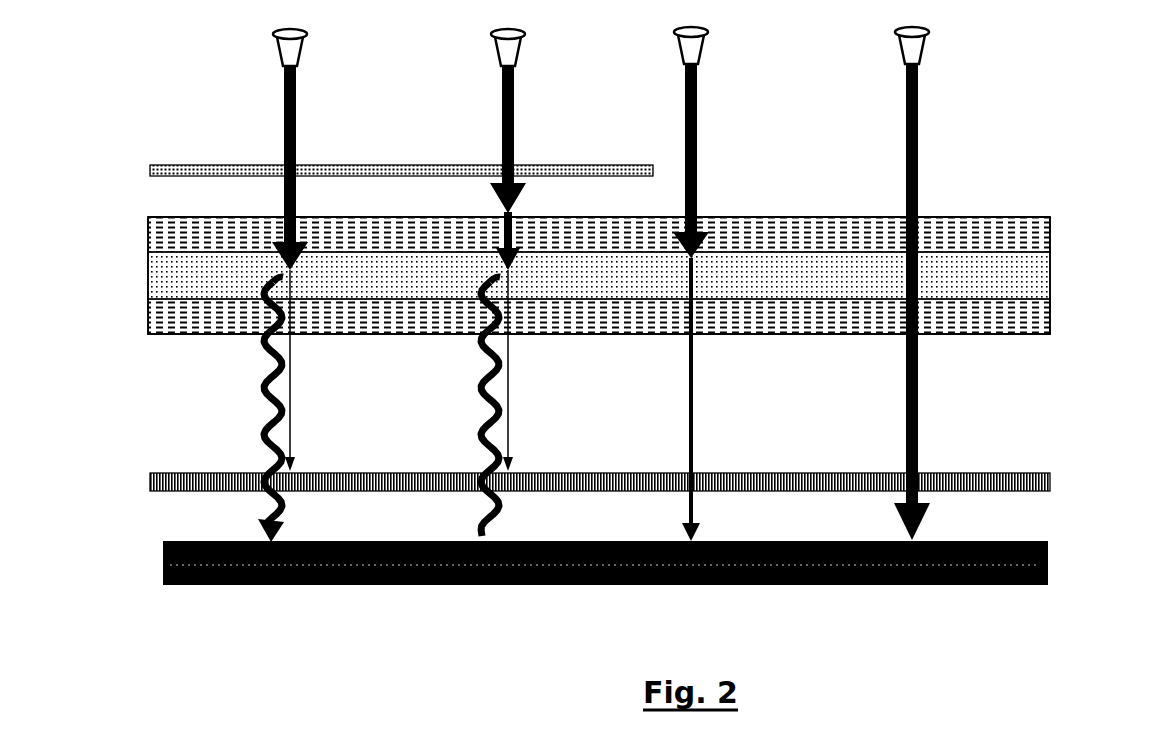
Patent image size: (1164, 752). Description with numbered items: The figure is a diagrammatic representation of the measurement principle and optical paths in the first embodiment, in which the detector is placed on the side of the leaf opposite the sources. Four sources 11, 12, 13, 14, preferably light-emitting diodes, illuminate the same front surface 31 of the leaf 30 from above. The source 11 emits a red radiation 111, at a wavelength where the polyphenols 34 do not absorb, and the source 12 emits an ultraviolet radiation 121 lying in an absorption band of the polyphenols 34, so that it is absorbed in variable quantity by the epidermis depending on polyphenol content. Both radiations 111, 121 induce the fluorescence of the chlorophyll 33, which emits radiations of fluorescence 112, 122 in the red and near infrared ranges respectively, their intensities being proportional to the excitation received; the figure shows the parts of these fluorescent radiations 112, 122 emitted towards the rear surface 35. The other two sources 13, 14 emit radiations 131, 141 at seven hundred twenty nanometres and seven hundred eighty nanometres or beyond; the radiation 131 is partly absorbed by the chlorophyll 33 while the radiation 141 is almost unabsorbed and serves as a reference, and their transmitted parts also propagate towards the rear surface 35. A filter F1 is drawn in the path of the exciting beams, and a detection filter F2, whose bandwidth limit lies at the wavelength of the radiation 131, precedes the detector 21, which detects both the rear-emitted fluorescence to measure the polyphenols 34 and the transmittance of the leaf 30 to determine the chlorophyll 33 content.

The source 11 is at (277, 44).
The source 12 is at (495, 44).
The source 13 is at (679, 42).
The source 14 is at (899, 44).
The radiation 111 is at (284, 119).
The radiation 121 is at (502, 109).
The radiation 131 is at (685, 117).
The radiation 141 is at (906, 110).
The radiation of fluorescence 112 is at (264, 368).
The radiation of fluorescence 122 is at (482, 350).
The leaf 30 is at (592, 268).
The front surface 31 is at (1000, 215).
The chlorophyll 33 is at (166, 274).
The polyphenols 34 is at (168, 230).
The rear surface 35 is at (1024, 334).
The detector 21 is at (163, 563).
The filter F1 is at (161, 165).
The detection filter F2 is at (151, 492).